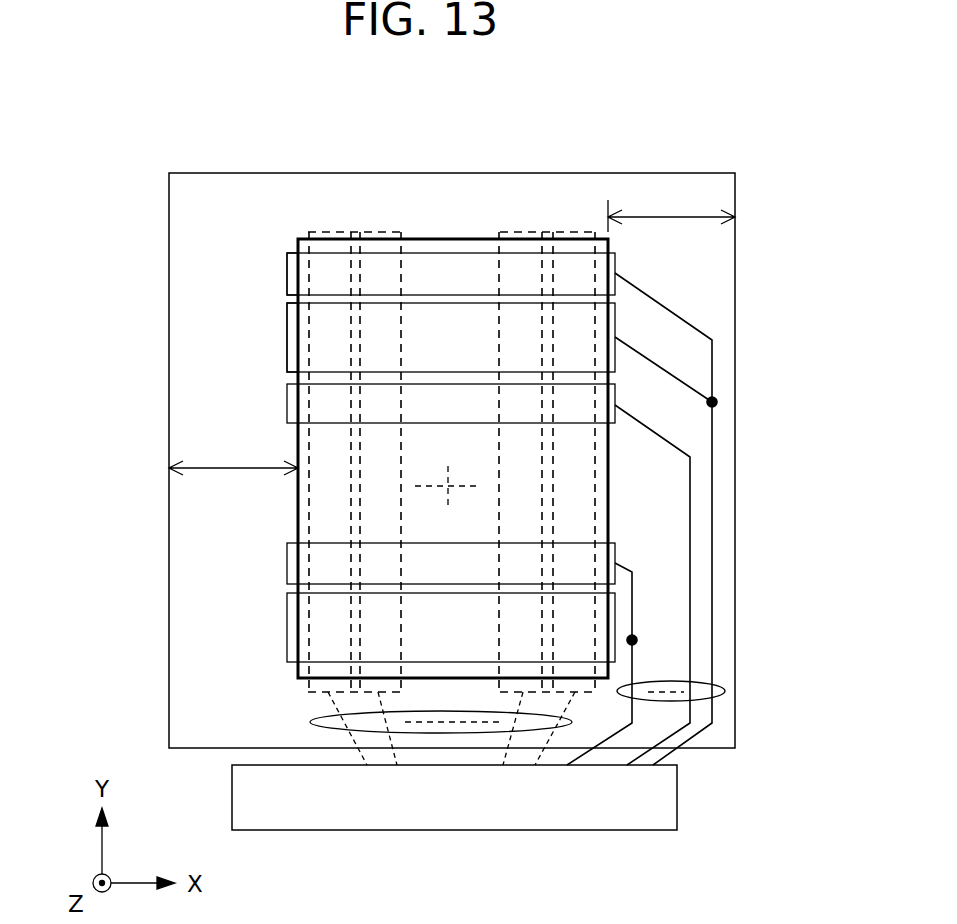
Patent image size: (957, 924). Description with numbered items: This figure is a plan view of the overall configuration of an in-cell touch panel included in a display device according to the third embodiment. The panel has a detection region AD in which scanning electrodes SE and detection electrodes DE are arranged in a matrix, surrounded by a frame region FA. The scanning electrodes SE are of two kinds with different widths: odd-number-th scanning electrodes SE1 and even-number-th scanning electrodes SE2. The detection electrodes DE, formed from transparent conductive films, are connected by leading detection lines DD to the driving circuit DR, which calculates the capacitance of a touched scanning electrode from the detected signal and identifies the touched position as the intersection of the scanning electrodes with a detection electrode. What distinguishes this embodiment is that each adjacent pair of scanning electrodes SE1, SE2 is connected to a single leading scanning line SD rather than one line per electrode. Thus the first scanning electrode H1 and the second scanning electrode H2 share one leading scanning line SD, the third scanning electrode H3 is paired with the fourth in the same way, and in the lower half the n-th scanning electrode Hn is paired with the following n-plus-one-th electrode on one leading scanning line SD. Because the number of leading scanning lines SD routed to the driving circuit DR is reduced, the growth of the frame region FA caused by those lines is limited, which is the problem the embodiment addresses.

The detection electrode DE is at (328, 232).
The detection region AD is at (450, 239).
The frame region FA is at (452, 330).
The scanning electrode SE is at (75, 234).
The scanning electrode SE1 is at (287, 275).
The scanning electrode SE2 is at (287, 320).
The first scanning electrode H1 is at (451, 274).
The second scanning electrode H2 is at (451, 337).
The third scanning electrode H3 is at (451, 403).
The n-th scanning electrode Hn is at (451, 563).
The leading scanning line SD is at (679, 672).
The leading detection line DD is at (290, 731).
The driving circuit DR is at (454, 797).